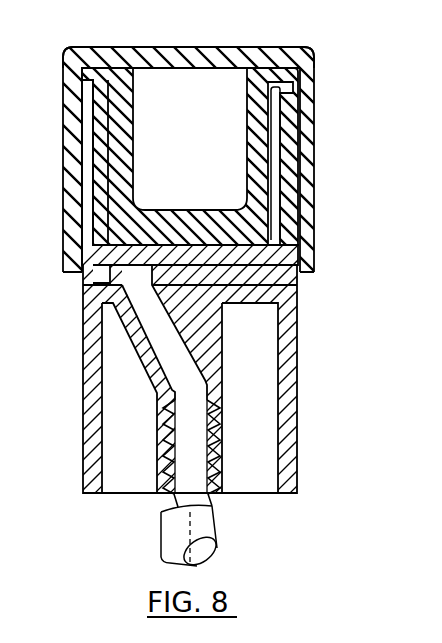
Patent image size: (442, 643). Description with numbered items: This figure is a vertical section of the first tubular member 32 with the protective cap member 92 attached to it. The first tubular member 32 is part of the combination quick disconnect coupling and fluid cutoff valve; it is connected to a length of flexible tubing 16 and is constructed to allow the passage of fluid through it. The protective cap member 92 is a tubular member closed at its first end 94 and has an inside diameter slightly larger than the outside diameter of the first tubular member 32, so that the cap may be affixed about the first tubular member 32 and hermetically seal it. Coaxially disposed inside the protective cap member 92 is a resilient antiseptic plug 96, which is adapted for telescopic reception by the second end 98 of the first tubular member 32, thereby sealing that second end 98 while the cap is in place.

The protective cap member 92 is at (313, 199).
The first end 94 is at (257, 47).
The resilient antiseptic plug 96 is at (287, 137).
The second end 98 is at (296, 86).
The first tubular member 32 is at (298, 338).
The flexible tubing 16 is at (213, 527).